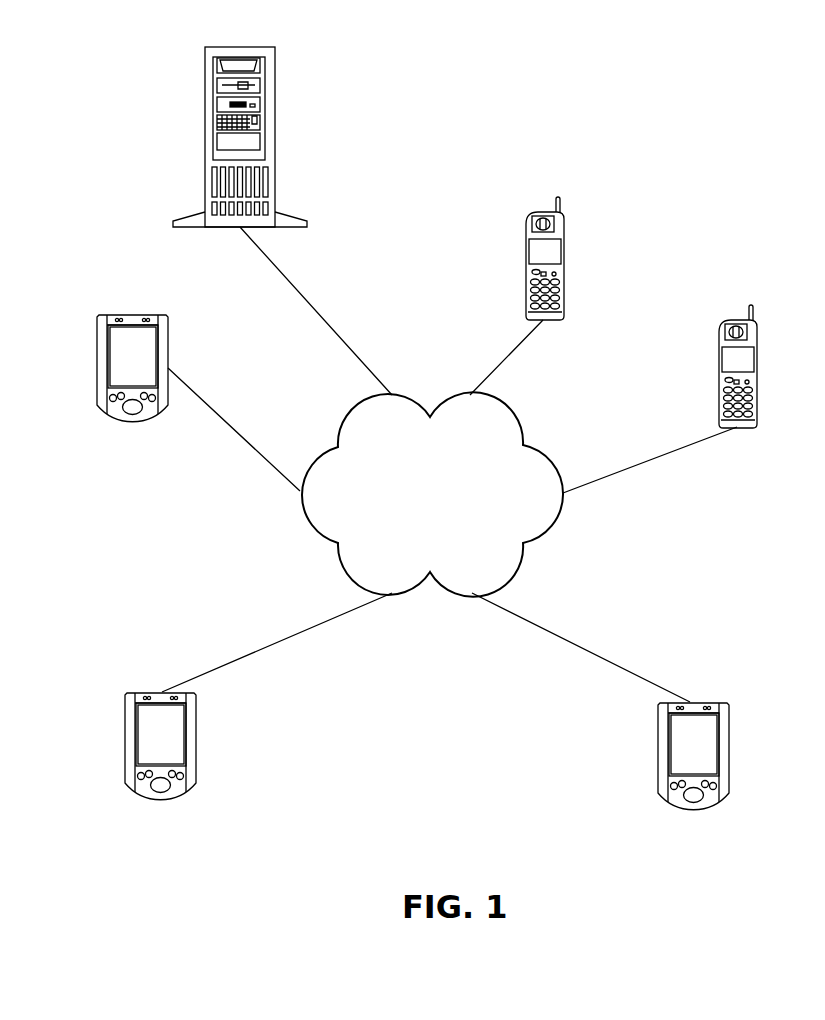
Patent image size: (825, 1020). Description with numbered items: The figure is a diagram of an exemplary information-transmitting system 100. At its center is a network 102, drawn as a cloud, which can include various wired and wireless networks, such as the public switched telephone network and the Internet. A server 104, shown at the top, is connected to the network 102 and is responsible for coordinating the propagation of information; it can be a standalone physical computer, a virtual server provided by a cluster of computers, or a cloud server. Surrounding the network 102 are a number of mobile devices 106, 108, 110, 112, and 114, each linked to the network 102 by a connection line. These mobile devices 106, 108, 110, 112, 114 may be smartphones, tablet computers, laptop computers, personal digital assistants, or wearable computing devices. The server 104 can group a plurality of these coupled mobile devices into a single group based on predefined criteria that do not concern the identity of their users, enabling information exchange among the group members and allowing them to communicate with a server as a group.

The information-transmitting system 100 is at (465, 851).
The network 102 is at (432, 494).
The server 104 is at (275, 137).
The mobile device 106 is at (132, 313).
The mobile device 108 is at (160, 693).
The mobile device 110 is at (690, 702).
The mobile device 112 is at (760, 365).
The mobile device 114 is at (565, 258).